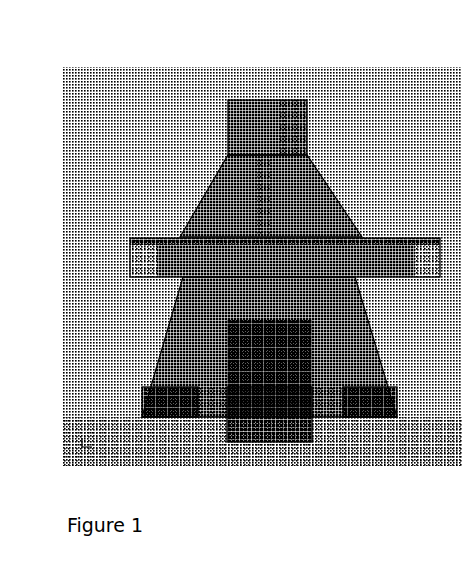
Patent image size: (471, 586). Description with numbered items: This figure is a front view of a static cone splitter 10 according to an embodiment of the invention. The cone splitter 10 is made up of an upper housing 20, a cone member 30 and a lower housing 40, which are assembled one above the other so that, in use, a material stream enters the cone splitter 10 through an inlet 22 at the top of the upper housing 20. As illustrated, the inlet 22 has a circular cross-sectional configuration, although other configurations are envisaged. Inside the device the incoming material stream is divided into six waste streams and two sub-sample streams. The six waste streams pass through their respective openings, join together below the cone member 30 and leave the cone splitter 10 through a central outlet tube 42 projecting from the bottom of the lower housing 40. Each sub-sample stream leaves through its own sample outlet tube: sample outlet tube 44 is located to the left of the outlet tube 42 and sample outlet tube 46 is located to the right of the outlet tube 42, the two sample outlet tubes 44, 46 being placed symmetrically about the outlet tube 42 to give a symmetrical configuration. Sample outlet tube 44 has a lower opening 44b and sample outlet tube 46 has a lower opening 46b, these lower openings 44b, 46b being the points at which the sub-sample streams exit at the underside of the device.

The static cone splitter 10 is at (234, 260).
The upper housing 20 is at (322, 198).
The inlet 22 is at (276, 100).
The cone member 30 is at (365, 257).
The lower housing 40 is at (307, 345).
The outlet tube 42 is at (267, 444).
The sample outlet tube 44 is at (145, 403).
The lower opening 44b is at (170, 428).
The sample outlet tube 46 is at (375, 398).
The lower opening 46b is at (375, 424).